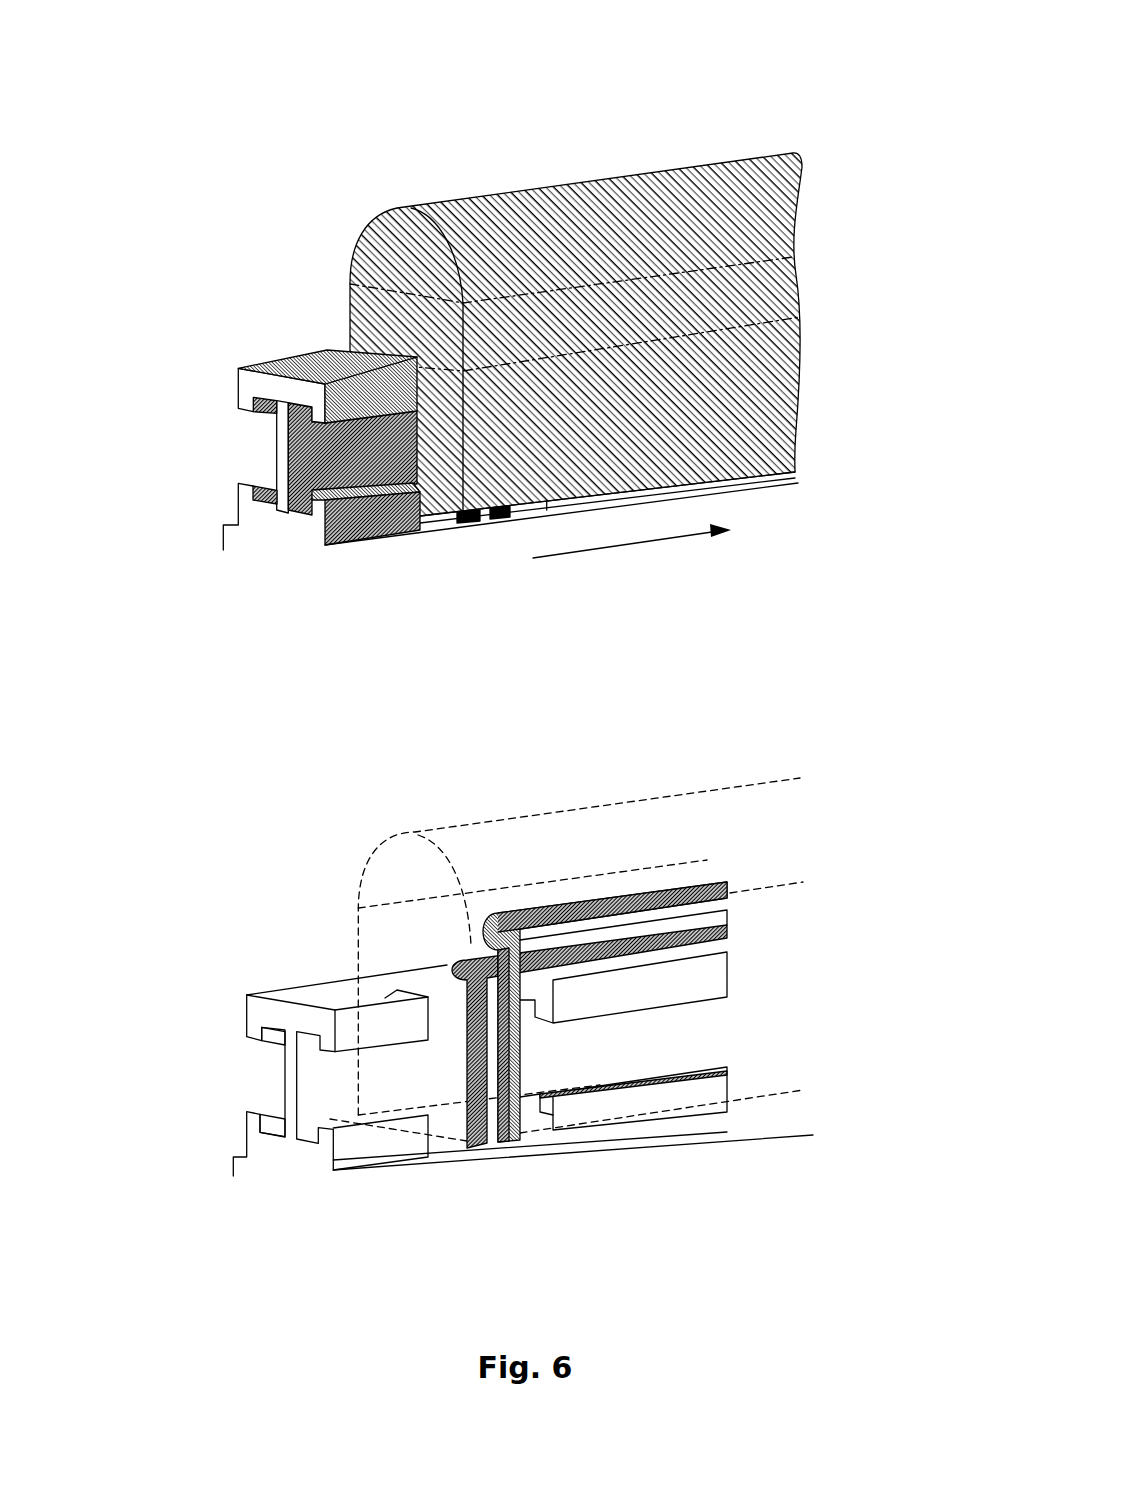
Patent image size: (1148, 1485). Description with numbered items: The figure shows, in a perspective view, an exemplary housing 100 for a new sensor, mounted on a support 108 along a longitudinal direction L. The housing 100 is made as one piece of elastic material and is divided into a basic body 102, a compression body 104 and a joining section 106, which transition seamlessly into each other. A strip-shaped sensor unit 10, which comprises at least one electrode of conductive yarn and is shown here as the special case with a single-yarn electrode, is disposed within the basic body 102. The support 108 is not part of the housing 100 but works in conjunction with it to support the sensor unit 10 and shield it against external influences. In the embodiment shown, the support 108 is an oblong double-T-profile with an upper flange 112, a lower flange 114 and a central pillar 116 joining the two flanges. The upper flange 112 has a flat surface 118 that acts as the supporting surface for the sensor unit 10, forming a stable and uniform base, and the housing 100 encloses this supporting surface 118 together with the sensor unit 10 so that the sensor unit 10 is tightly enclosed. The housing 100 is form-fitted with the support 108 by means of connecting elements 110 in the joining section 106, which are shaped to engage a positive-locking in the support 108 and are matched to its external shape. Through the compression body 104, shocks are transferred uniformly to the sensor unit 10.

The housing 100 is at (600, 110).
The strip-shaped sensor unit 10 is at (428, 940).
The basic body 102 is at (769, 293).
The compression body 104 is at (660, 185).
The joining section 106 is at (782, 400).
The support 108 is at (305, 358).
The connecting elements 110 is at (443, 453).
The upper flange 112 is at (262, 391).
The lower flange 114 is at (252, 517).
The central pillar 116 is at (282, 493).
The flat surface 118 is at (340, 355).